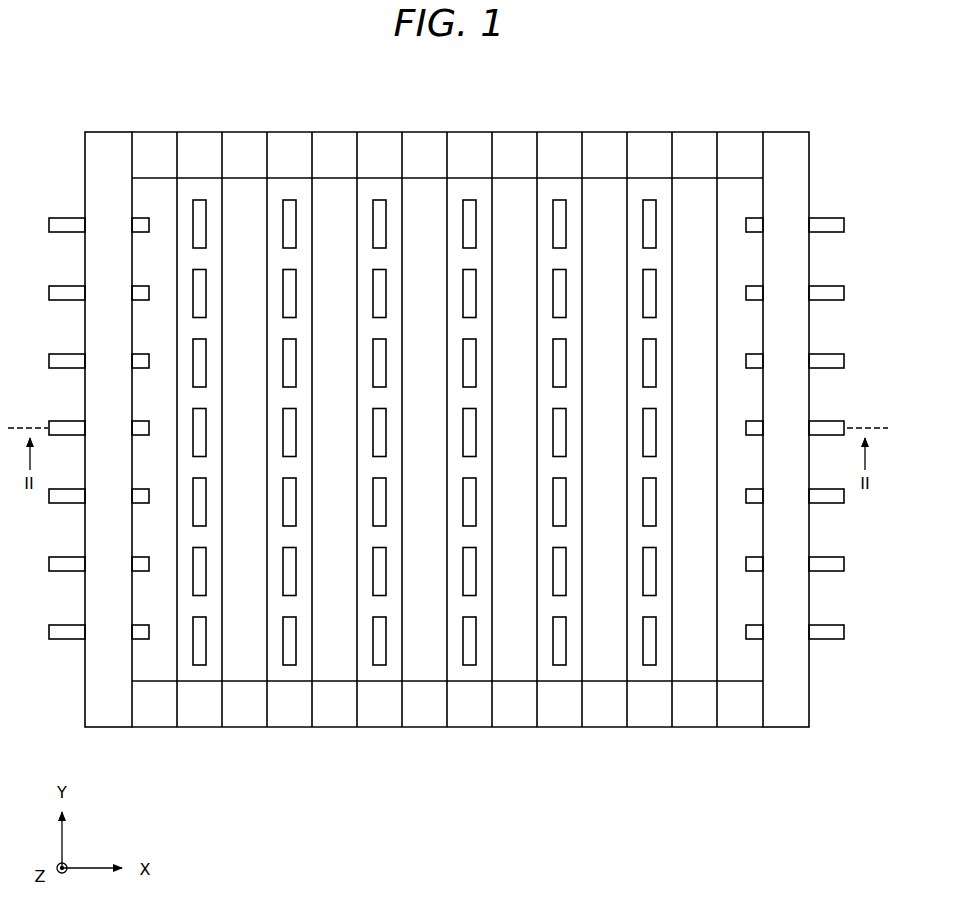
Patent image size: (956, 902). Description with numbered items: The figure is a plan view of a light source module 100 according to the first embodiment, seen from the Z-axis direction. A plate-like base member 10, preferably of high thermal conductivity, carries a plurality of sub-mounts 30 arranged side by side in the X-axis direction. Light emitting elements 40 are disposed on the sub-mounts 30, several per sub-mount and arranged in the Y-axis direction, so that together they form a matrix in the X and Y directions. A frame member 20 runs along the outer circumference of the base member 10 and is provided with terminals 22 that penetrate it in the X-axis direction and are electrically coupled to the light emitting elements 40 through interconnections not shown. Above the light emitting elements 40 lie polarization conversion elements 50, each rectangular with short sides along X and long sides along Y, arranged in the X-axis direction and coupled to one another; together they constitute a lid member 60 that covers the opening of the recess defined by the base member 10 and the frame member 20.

The light source module 100 is at (801, 91).
The lid member 60 is at (109, 113).
The base member 10 is at (423, 650).
The frame member 20 is at (782, 665).
The terminals 22 is at (65, 217).
The sub-mounts 30 is at (295, 673).
The light emitting elements 40 is at (200, 348).
The polarization conversion elements 50 is at (357, 130).